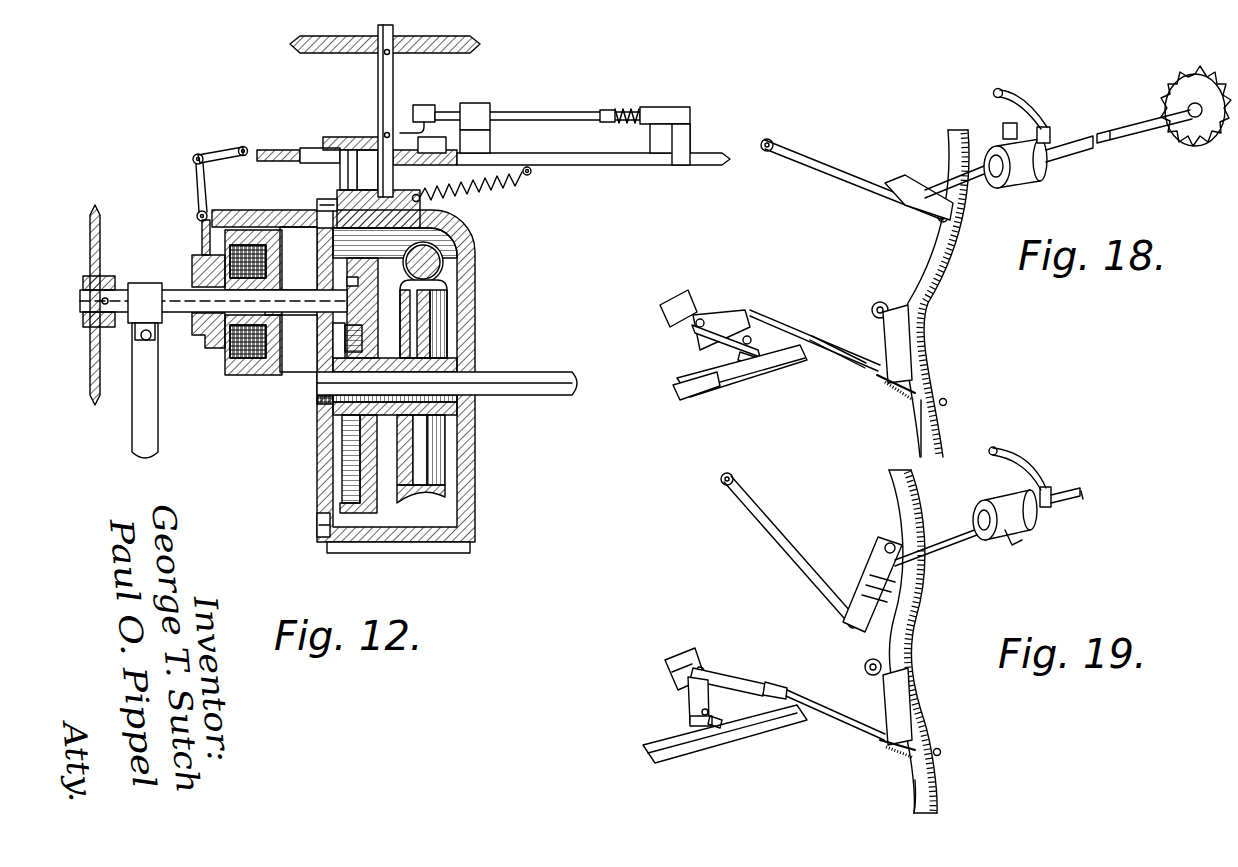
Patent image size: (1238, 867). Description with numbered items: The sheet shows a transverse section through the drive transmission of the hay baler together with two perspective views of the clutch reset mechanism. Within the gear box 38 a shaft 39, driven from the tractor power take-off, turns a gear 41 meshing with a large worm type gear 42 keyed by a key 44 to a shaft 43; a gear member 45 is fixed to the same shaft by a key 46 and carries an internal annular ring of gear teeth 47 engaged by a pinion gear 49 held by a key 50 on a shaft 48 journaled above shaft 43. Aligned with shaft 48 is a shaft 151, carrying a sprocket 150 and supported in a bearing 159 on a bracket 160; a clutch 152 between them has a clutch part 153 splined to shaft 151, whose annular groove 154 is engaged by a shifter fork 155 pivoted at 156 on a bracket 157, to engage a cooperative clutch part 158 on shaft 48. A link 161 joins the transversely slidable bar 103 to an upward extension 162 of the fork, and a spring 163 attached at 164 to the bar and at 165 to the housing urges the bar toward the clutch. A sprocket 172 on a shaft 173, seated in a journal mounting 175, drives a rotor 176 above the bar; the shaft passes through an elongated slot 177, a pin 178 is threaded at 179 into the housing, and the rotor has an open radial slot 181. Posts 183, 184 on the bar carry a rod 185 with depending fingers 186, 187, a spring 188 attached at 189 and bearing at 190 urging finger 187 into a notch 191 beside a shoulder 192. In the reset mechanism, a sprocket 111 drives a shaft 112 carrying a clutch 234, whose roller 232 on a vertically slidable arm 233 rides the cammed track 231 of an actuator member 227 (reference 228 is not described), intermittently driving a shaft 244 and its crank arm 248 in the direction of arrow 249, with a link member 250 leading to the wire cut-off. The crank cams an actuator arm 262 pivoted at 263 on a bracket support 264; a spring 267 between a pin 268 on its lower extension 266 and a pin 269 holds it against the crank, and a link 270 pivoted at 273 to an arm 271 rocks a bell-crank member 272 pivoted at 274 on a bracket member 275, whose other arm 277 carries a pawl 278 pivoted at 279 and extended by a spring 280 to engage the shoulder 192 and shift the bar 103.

In FIG. 12, the gear box 38 is at (478, 501).
In FIG. 12, the shaft 39 is at (445, 263).
In FIG. 12, the gear 41 is at (468, 236).
In FIG. 12, the worm type gear 42 is at (440, 305).
In FIG. 12, the shaft 43 is at (527, 396).
In FIG. 12, the key 44 is at (458, 358).
In FIG. 12, the gear member 45 is at (342, 460).
In FIG. 12, the key 46 is at (318, 401).
In FIG. 12, the internal annular ring of gear teeth 47 is at (342, 492).
In FIG. 12, the shaft 48 is at (312, 322).
In FIG. 12, the pinion gear 49 is at (330, 268).
In FIG. 12, the key 50 is at (347, 281).
In FIG. 12, the transversely slidable bar 103 is at (623, 168).
In FIG. 12, the sprocket 150 is at (94, 205).
In FIG. 12, the shaft 151 is at (122, 288).
In FIG. 12, the clutch 152 is at (222, 378).
In FIG. 12, the clutch part 153 is at (195, 330).
In FIG. 12, the annular groove 154 is at (205, 348).
In FIG. 12, the shifter fork 155 is at (202, 234).
In FIG. 12, the pivot 156 is at (197, 215).
In FIG. 12, the bracket 157 is at (243, 202).
In FIG. 12, the cooperative clutch part 158 is at (247, 376).
In FIG. 12, the bearing 159 is at (152, 284).
In FIG. 12, the bracket 160 is at (133, 434).
In FIG. 12, the link 161 is at (218, 153).
In FIG. 12, the upward extension 162 is at (195, 168).
In FIG. 12, the spring 163 is at (497, 184).
In FIG. 12, the spring attachment point 164 is at (531, 173).
In FIG. 12, the spring attachment point 165 is at (419, 194).
In FIG. 12, the sprocket 172 is at (290, 46).
In FIG. 12, the shaft 173 is at (378, 77).
In FIG. 12, the journal mounting 175 is at (420, 200).
In FIG. 12, the rotor 176 is at (349, 135).
In FIG. 12, the elongated slot 177 is at (310, 148).
In FIG. 12, the pin 178 is at (340, 172).
In FIG. 12, the threaded fixing 179 is at (337, 198).
In FIG. 12, the open radial slot 181 is at (470, 104).
In FIG. 12, the post member 183 is at (490, 135).
In FIG. 12, the post member 184 is at (650, 134).
In FIG. 12, the rod 185 is at (525, 112).
In FIG. 12, the depending finger 186 is at (405, 120).
In FIG. 12, the depending finger 187 is at (687, 150).
In FIG. 12, the spring 188 is at (630, 108).
In FIG. 12, the spring attachment point 189 is at (612, 118).
In FIG. 12, the spring end 190 is at (652, 115).
In FIG. 18, the sprocket 111 is at (1195, 148).
In FIG. 18, the shaft 112 is at (1133, 140).
In FIG. 19, the shaft 112 is at (1078, 495).
In FIG. 18, the notch 191 is at (696, 378).
In FIG. 19, the notch 191 is at (718, 736).
In FIG. 18, the shoulder 192 is at (722, 372).
In FIG. 19, the shoulder 192 is at (728, 722).
In FIG. 18, the actuator member 227 is at (1044, 124).
In FIG. 19, the actuator member 227 is at (1048, 484).
In FIG. 18, the shaft 228 is at (1095, 134).
In FIG. 19, the shaft 228 is at (1070, 490).
In FIG. 18, the cammed track 231 is at (1040, 124).
In FIG. 19, the cammed track 231 is at (1010, 480).
In FIG. 18, the roller 232 is at (996, 90).
In FIG. 18, the vertically slidable arm 233 is at (1003, 131).
In FIG. 18, the clutch 234 is at (1030, 180).
In FIG. 19, the clutch 234 is at (1036, 528).
In FIG. 18, the shaft 244 is at (988, 183).
In FIG. 19, the shaft 244 is at (938, 538).
In FIG. 18, the crank arm 248 is at (944, 175).
In FIG. 19, the crank arm 248 is at (882, 587).
In FIG. 19, the arrow 249 is at (858, 576).
In FIG. 18, the link member 250 is at (870, 186).
In FIG. 19, the link member 250 is at (770, 540).
In FIG. 18, the actuator arm 262 is at (953, 130).
In FIG. 19, the actuator arm 262 is at (892, 508).
In FIG. 18, the pivot 263 is at (876, 302).
In FIG. 19, the pivot 263 is at (866, 665).
In FIG. 18, the bracket support 264 is at (942, 380).
In FIG. 19, the bracket support 264 is at (935, 775).
In FIG. 18, the lower extension 266 is at (907, 345).
In FIG. 19, the lower extension 266 is at (905, 713).
In FIG. 18, the spring 267 is at (900, 395).
In FIG. 19, the spring 267 is at (895, 760).
In FIG. 18, the pin 268 is at (886, 380).
In FIG. 19, the pin 268 is at (890, 744).
In FIG. 18, the pin 269 is at (946, 400).
In FIG. 19, the pin 269 is at (941, 751).
In FIG. 18, the link 270 is at (840, 355).
In FIG. 19, the link 270 is at (812, 710).
In FIG. 19, the arm 271 is at (722, 680).
In FIG. 19, the bell-crank member 272 is at (680, 686).
In FIG. 18, the pivotal attachment 273 is at (760, 312).
In FIG. 19, the pivotal attachment 273 is at (760, 681).
In FIG. 18, the pivot 274 is at (678, 300).
In FIG. 19, the pivot 274 is at (700, 666).
In FIG. 18, the bracket member 275 is at (715, 312).
In FIG. 19, the bracket member 275 is at (686, 652).
In FIG. 18, the arm 277 is at (700, 340).
In FIG. 19, the arm 277 is at (689, 702).
In FIG. 18, the pawl 278 is at (752, 366).
In FIG. 19, the pawl 278 is at (698, 724).
In FIG. 19, the pivot 279 is at (690, 722).
In FIG. 18, the spring 280 is at (752, 338).
In FIG. 19, the spring 280 is at (708, 711).